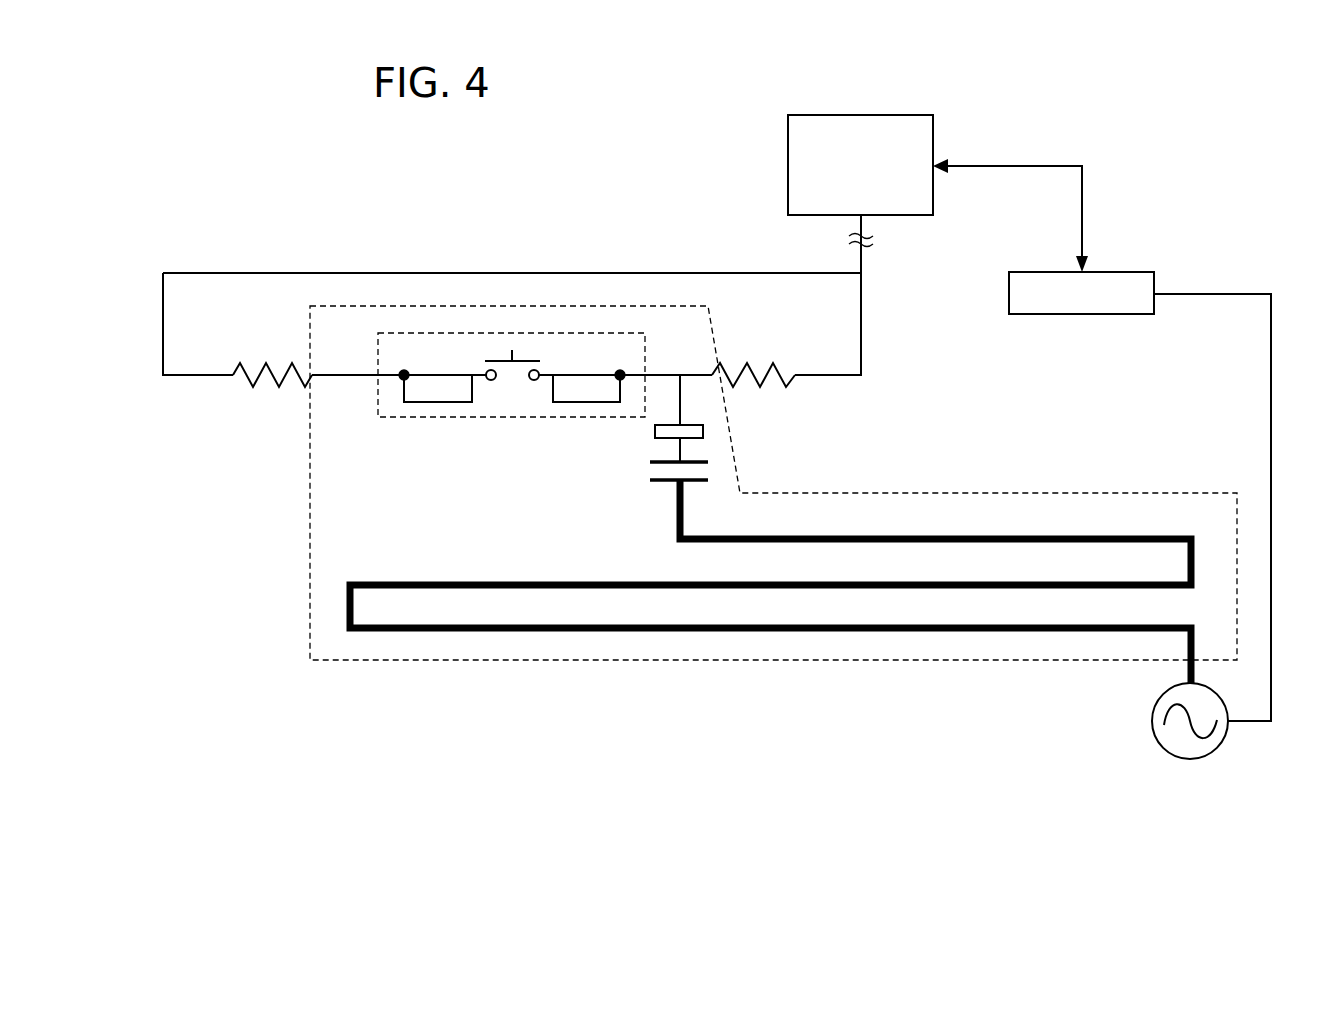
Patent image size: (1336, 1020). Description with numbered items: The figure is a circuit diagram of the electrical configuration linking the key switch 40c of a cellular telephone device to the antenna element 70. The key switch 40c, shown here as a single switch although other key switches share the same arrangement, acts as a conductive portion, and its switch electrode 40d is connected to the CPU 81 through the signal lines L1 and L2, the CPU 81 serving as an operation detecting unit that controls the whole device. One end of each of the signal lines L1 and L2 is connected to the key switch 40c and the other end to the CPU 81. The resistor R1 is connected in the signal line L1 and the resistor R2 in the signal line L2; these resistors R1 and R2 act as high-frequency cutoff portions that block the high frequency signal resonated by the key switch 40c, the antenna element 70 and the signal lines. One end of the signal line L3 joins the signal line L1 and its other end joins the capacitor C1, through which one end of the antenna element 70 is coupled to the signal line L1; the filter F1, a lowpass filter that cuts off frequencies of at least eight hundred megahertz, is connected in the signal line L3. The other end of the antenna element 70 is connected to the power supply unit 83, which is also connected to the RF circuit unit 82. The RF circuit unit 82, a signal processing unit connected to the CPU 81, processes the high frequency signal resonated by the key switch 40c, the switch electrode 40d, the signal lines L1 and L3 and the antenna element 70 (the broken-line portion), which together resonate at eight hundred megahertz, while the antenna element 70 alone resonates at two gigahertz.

The CPU 81 is at (933, 115).
The RF circuit unit 82 is at (1137, 272).
The power supply unit 83 is at (1170, 756).
The antenna element 70 is at (845, 660).
The key switch 40c is at (507, 414).
The switch electrode 40d is at (509, 395).
The signal line L1 is at (690, 375).
The signal line L2 is at (163, 333).
The signal line L3 is at (676, 449).
The resistor R1 is at (753, 390).
The resistor R2 is at (272, 390).
The filter F1 is at (655, 431).
The capacitor C1 is at (660, 481).